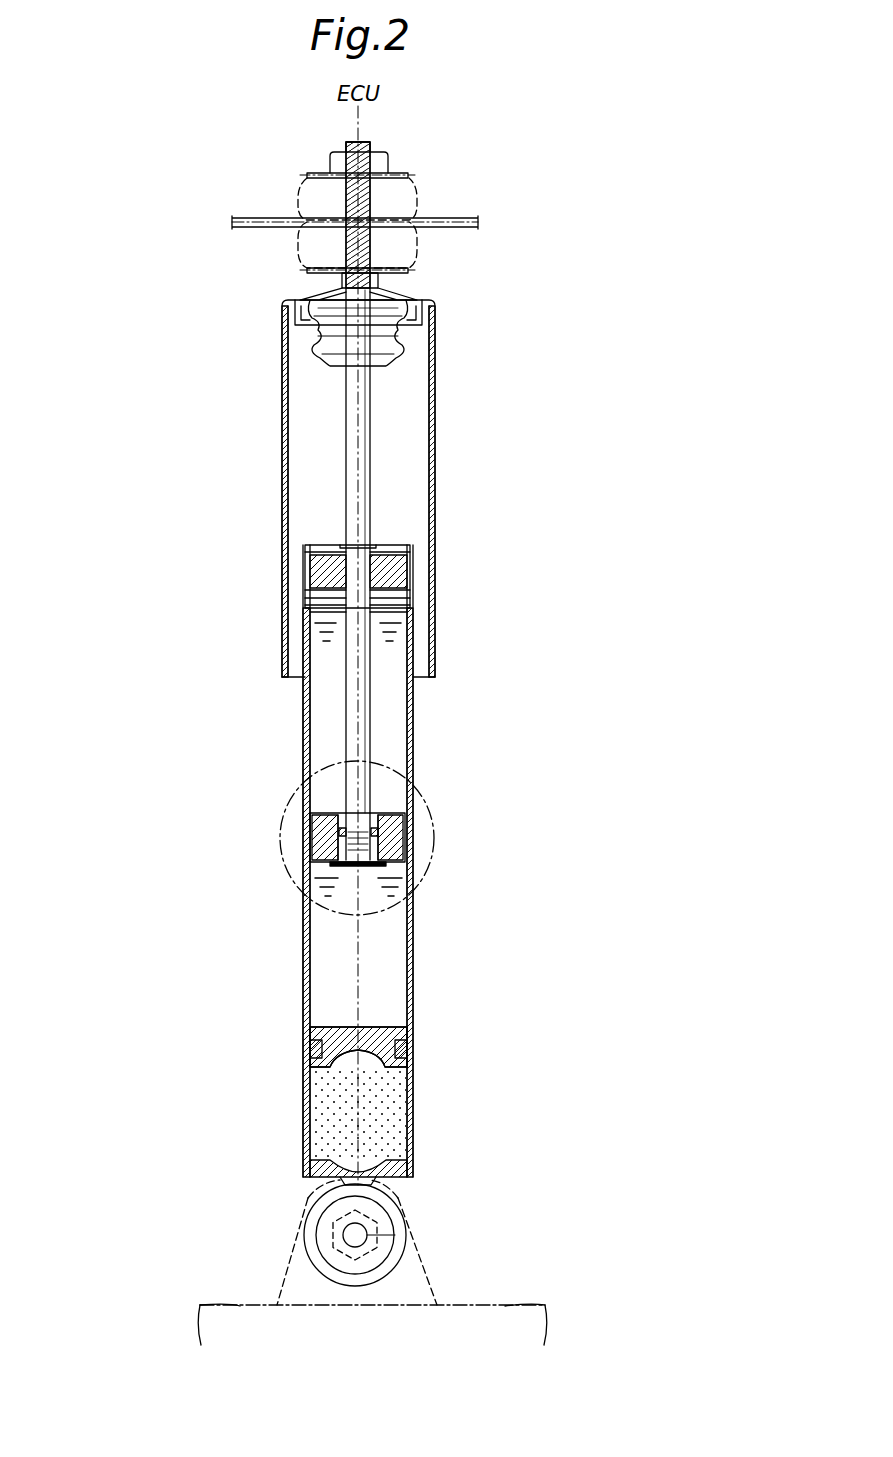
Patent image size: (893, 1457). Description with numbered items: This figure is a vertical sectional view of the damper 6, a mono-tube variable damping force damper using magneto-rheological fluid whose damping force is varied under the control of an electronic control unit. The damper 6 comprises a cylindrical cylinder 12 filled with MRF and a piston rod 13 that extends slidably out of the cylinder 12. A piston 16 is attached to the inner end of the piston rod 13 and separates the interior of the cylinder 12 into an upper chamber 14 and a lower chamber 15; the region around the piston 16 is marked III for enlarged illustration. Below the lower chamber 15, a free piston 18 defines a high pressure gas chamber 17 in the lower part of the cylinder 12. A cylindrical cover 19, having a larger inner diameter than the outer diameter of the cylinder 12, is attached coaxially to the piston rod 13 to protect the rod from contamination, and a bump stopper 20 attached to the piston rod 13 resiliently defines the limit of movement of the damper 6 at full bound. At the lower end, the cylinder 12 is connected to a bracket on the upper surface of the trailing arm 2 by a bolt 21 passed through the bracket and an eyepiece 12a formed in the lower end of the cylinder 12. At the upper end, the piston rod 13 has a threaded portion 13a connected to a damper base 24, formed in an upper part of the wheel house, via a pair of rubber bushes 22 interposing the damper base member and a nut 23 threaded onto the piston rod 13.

The trailing arm 2 is at (490, 1310).
The damper 6 is at (105, 410).
The cylinder 12 is at (305, 918).
The eyepiece 12a is at (310, 1222).
The piston rod 13 is at (345, 722).
The threaded portion 13a is at (346, 145).
The upper chamber 14 is at (393, 715).
The lower chamber 15 is at (393, 930).
The piston 16 is at (320, 818).
The high pressure gas chamber 17 is at (393, 1118).
The free piston 18 is at (318, 1036).
The cylindrical cover 19 is at (282, 487).
The bump stopper 20 is at (330, 350).
The bolt 21 is at (410, 1230).
The rubber bushes 22 is at (415, 195).
The nut 23 is at (388, 156).
The damper base 24 is at (253, 217).
The enlarged portion III is at (436, 818).